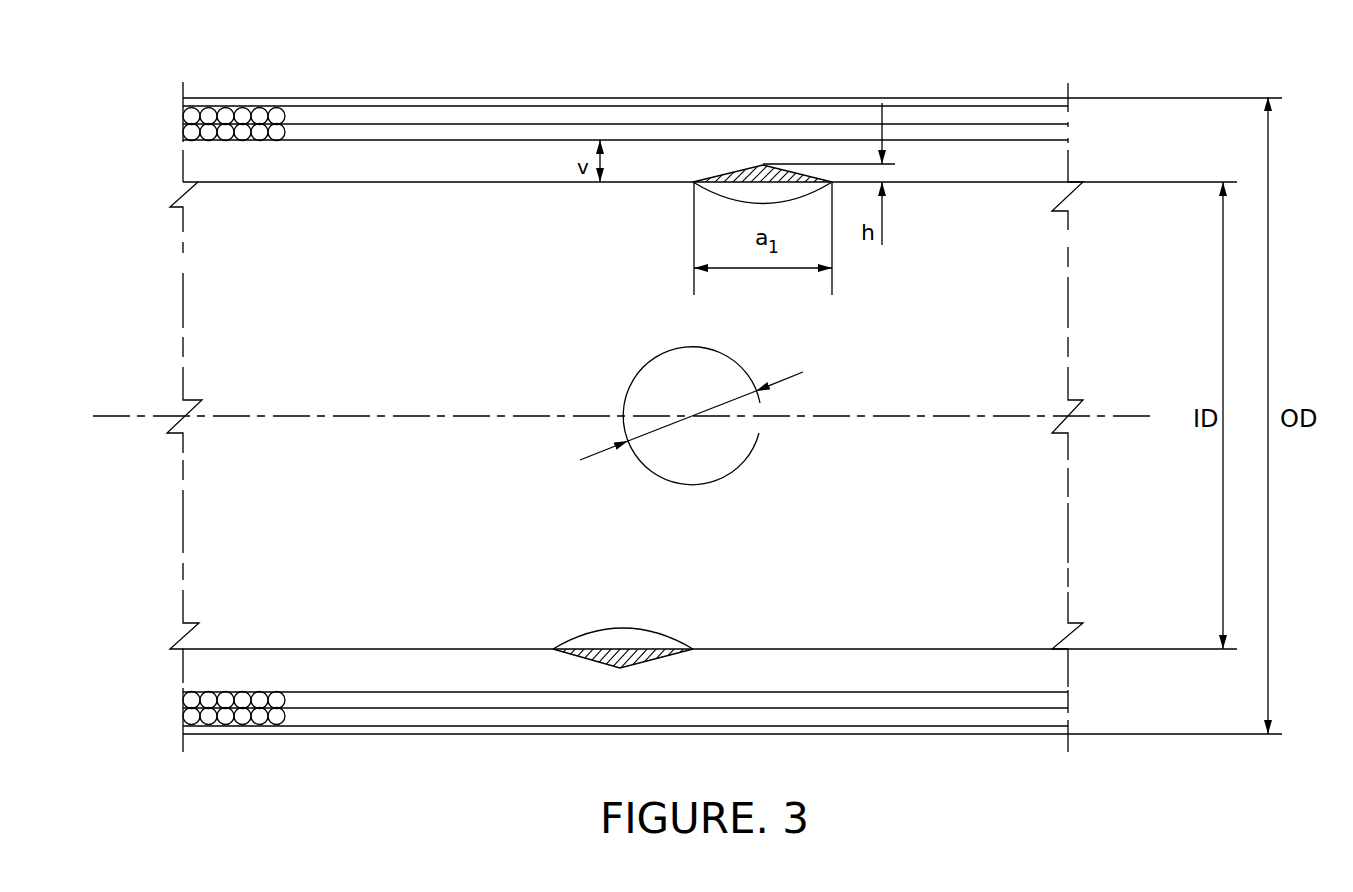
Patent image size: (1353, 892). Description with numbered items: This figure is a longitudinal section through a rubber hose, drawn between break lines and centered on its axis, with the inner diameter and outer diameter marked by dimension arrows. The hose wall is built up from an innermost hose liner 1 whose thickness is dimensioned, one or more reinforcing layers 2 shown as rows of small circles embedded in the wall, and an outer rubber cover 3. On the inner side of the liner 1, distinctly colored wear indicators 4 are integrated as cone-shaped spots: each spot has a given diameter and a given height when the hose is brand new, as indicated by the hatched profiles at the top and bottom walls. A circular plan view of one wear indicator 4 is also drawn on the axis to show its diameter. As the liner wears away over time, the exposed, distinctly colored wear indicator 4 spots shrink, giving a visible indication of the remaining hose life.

The hose liner 1 is at (418, 166).
The reinforcing layer 2 is at (243, 110).
The cover 3 is at (508, 103).
The distinctly colored wear indicator 4 is at (757, 168).